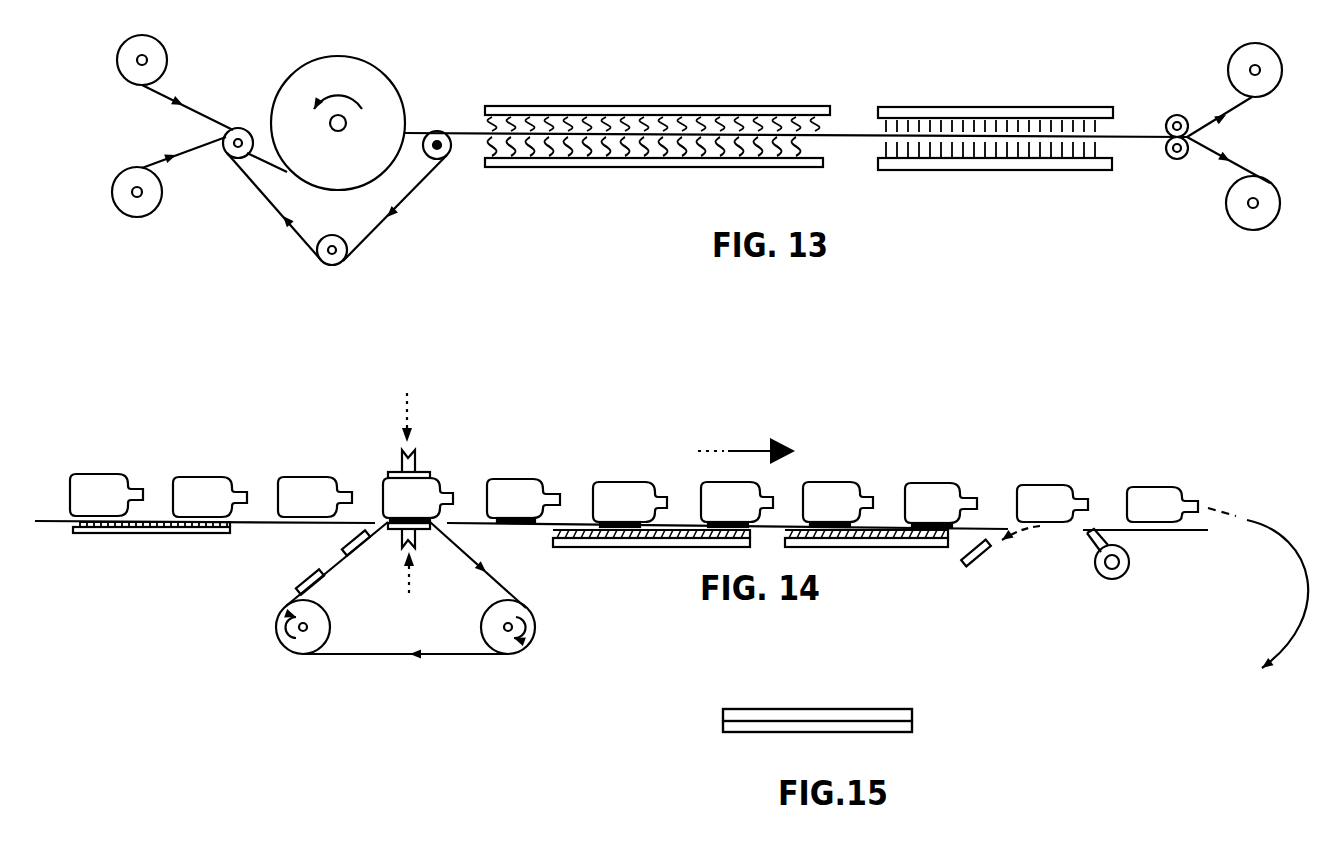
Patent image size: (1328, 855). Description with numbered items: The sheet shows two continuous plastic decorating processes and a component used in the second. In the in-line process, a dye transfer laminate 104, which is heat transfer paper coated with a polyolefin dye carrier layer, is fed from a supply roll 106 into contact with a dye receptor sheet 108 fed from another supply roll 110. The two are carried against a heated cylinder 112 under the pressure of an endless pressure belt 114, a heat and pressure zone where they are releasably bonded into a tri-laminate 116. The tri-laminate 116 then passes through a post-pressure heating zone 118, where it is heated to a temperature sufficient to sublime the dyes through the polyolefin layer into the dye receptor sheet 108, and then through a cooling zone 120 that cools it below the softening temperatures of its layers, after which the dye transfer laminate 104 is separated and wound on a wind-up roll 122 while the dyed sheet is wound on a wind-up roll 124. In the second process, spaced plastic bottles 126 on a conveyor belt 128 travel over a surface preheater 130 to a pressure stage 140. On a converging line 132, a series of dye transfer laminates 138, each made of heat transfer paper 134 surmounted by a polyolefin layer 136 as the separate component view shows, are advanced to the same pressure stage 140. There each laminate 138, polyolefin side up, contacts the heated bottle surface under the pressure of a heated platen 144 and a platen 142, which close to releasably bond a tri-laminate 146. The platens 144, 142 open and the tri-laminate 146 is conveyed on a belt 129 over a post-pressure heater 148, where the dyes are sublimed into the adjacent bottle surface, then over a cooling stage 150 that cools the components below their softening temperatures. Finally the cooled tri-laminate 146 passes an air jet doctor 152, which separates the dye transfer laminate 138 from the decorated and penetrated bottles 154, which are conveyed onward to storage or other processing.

In FIG. 13, the dye transfer laminate 104 is at (200, 108).
In FIG. 13, the supply roll 106 is at (167, 57).
In FIG. 13, the dye receptor sheet 108 is at (190, 151).
In FIG. 13, the supply roll 110 is at (150, 210).
In FIG. 13, the heated cylinder 112 is at (390, 97).
In FIG. 13, the endless pressure belt 114 is at (263, 140).
In FIG. 13, the tri-laminate 116 is at (468, 134).
In FIG. 13, the post-pressure heating zone 118 is at (695, 107).
In FIG. 13, the cooling zone 120 is at (1012, 110).
In FIG. 13, the wind-up roll 122 is at (1242, 58).
In FIG. 13, the wind-up roll 124 is at (1272, 207).
In FIG. 14, the plastic bottles 126 is at (118, 487).
In FIG. 14, the conveyor belt 128 is at (57, 522).
In FIG. 14, the belt 129 is at (481, 523).
In FIG. 14, the surface preheater 130 is at (182, 533).
In FIG. 14, the converging line 132 is at (342, 570).
In FIG. 15, the heat transfer paper 134 is at (907, 731).
In FIG. 15, the polyolefin layer 136 is at (913, 711).
In FIG. 14, the dye transfer laminate 138 is at (343, 545).
In FIG. 15, the dye transfer laminate 138 is at (889, 708).
In FIG. 14, the pressure stage 140 is at (388, 473).
In FIG. 14, the platen 142 is at (430, 472).
In FIG. 14, the heated platen 144 is at (427, 524).
In FIG. 14, the tri-laminate 146 is at (540, 488).
In FIG. 14, the post-pressure heater 148 is at (615, 547).
In FIG. 14, the cooling stage 150 is at (860, 547).
In FIG. 14, the air jet doctor 152 is at (1112, 579).
In FIG. 14, the decorated and penetrated bottles 154 is at (1053, 486).